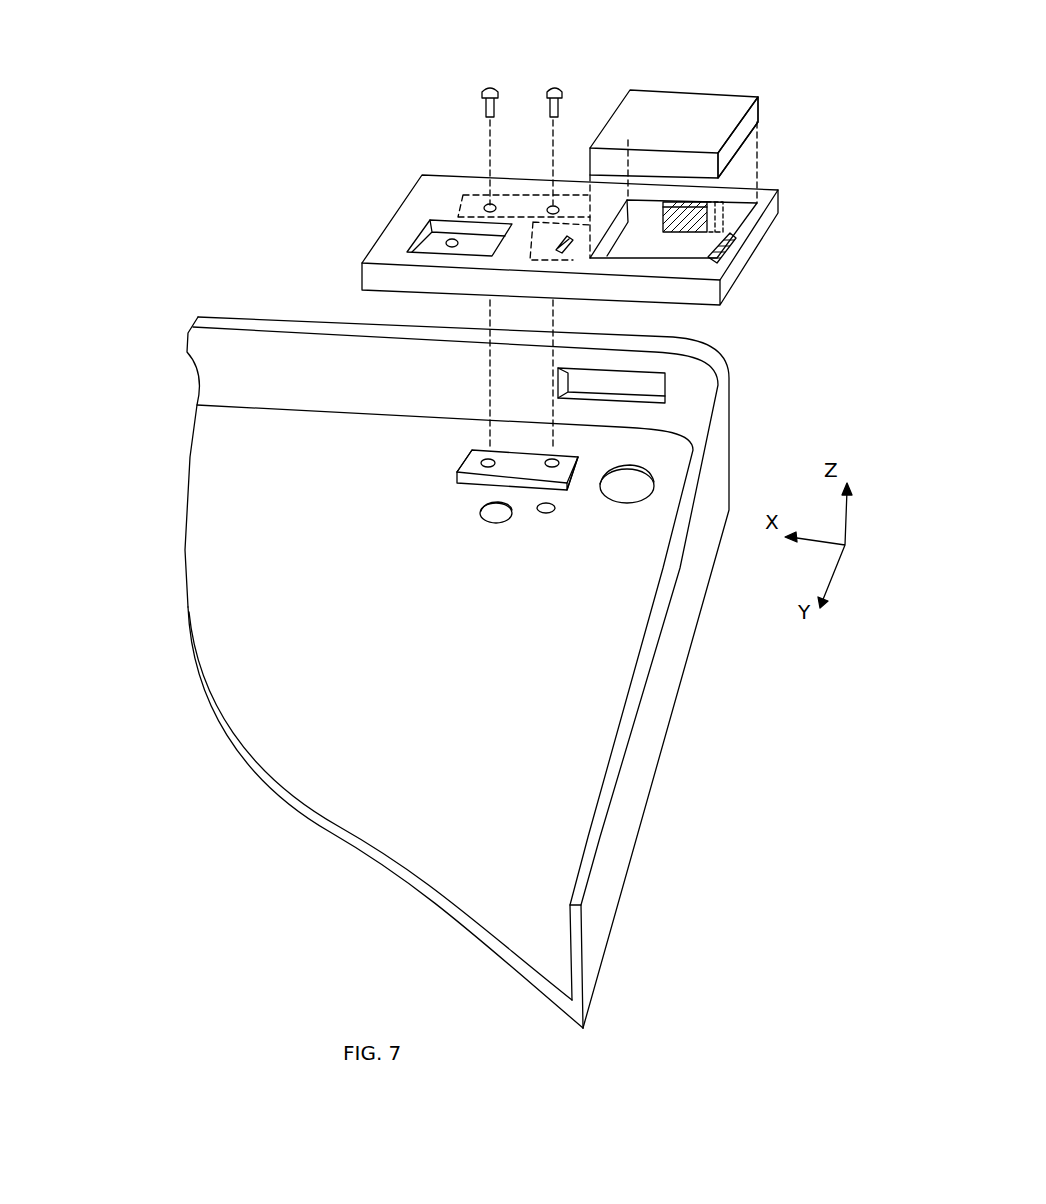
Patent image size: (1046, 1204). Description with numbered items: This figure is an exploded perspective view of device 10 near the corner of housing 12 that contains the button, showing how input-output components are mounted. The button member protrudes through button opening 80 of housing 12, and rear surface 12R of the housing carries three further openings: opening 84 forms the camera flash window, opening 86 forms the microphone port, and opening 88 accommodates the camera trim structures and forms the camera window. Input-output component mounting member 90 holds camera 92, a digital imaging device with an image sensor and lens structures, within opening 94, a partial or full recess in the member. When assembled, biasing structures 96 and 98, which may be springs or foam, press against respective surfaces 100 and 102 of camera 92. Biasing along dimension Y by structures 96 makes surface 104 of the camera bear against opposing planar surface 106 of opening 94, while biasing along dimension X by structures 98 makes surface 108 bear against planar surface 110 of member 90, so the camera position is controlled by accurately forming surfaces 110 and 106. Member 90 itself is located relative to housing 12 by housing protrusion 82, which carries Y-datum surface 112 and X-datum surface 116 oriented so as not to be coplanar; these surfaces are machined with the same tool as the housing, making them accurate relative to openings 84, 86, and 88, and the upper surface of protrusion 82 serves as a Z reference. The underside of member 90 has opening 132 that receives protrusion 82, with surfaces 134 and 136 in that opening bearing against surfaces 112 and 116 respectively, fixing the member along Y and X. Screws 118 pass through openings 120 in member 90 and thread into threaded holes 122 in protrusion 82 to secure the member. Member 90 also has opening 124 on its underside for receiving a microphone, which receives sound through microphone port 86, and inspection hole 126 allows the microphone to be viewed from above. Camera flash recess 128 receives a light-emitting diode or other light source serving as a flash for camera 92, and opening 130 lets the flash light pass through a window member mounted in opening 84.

The device 10 is at (128, 241).
The housing 12 is at (658, 707).
The rear surface 12R is at (455, 866).
The button opening 80 is at (643, 390).
The housing protrusion 82 is at (468, 474).
The opening 84 is at (494, 523).
The opening 86 is at (544, 514).
The opening 88 is at (629, 504).
The input-output component mounting member 90 is at (735, 268).
The camera 92 is at (743, 98).
The opening 94 is at (645, 238).
The biasing structure 96 is at (703, 214).
The biasing structure 98 is at (727, 240).
The surface of camera 100 is at (697, 100).
The surface of camera 102 is at (742, 135).
The surface of camera 104 is at (697, 163).
The planar surface 106 is at (633, 263).
The surface of camera 108 is at (620, 100).
The planar surface 110 is at (614, 242).
The Y-datum surface 112 is at (510, 457).
The X-datum surface 116 is at (580, 478).
The screw 118 is at (478, 92).
The opening 120 is at (485, 205).
The threaded hole 122 is at (482, 464).
The opening 124 is at (522, 193).
The inspection hole 126 is at (560, 247).
The camera flash recess 128 is at (436, 244).
The opening 130 is at (452, 232).
The opening 132 is at (462, 212).
The surface 134 is at (550, 195).
The surface 136 is at (592, 210).